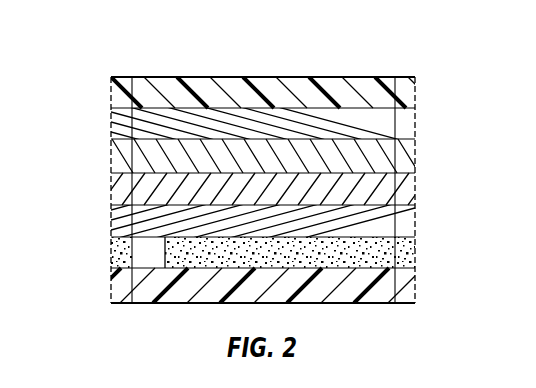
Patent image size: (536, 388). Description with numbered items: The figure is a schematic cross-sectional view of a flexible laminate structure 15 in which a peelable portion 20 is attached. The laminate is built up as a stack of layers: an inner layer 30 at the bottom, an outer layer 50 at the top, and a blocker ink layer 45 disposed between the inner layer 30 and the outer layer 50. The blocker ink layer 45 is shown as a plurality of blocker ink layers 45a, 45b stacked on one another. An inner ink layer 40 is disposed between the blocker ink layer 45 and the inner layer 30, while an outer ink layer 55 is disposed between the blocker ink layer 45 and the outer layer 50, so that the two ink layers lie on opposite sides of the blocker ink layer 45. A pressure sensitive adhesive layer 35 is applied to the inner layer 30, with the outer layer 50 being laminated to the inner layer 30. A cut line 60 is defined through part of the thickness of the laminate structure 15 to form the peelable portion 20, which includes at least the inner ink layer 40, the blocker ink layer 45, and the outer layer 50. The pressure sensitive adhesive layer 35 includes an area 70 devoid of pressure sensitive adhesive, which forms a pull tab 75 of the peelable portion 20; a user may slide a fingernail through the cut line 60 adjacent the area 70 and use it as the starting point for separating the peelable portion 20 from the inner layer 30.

The flexible laminate structure 15 is at (72, 65).
The peelable portion 20 is at (366, 64).
The inner layer 30 is at (406, 289).
The pressure sensitive adhesive layer 35 is at (406, 256).
The inner ink layer 40 is at (406, 222).
The blocker ink layer 45 is at (259, 172).
The blocker ink layer 45a is at (118, 187).
The blocker ink layer 45b is at (118, 152).
The outer layer 50 is at (406, 94).
The outer ink layer 55 is at (406, 126).
The cut line 60 is at (132, 77).
The area devoid of pressure sensitive adhesive 70 is at (151, 264).
The pull tab 75 is at (134, 76).